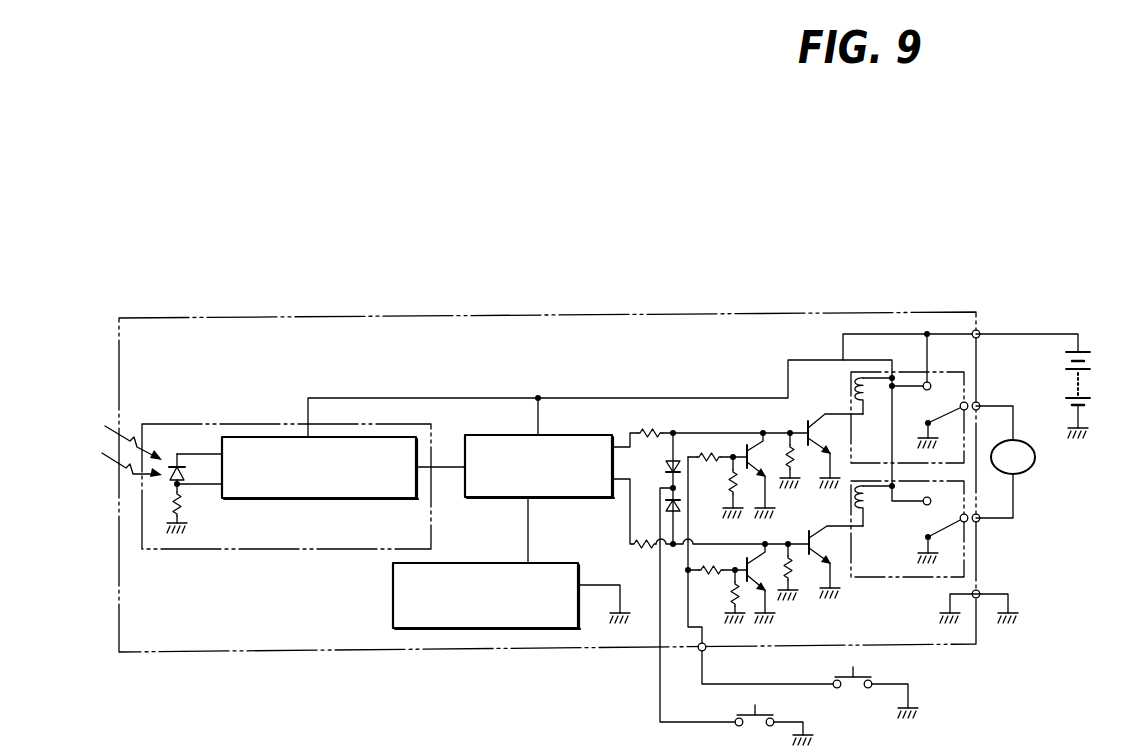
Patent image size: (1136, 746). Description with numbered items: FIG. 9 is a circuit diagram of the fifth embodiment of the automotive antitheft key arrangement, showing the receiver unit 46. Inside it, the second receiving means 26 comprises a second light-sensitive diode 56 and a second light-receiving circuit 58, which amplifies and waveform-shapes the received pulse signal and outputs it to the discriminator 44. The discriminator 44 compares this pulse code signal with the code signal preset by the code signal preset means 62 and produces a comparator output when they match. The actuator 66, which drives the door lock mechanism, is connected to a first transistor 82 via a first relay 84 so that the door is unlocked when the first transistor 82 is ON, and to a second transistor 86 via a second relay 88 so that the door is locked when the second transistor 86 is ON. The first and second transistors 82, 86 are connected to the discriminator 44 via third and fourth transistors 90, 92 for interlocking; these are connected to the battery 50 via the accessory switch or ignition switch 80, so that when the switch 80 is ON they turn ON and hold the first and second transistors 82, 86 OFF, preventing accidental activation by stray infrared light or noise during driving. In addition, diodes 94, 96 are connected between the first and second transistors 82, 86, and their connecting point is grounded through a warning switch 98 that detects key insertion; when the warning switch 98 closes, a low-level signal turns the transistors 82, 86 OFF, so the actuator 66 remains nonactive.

The receiver unit 46 is at (794, 313).
The second receiving means 26 is at (247, 551).
The second light-sensitive diode 56 is at (174, 463).
The second light-receiving circuit 58 is at (330, 499).
The discriminator 44 is at (576, 498).
The code signal preset means 62 is at (393, 603).
The diode 94 is at (668, 467).
The diode 96 is at (668, 495).
The third transistor 90 is at (745, 456).
The first transistor 82 is at (806, 424).
The fourth transistor 92 is at (746, 584).
The second transistor 86 is at (812, 556).
The first relay 84 is at (966, 400).
The second relay 88 is at (905, 578).
The battery 50 is at (1093, 361).
The actuator 66 is at (1032, 470).
The accessory switch or ignition switch 80 is at (862, 673).
The warning switch 98 is at (765, 711).